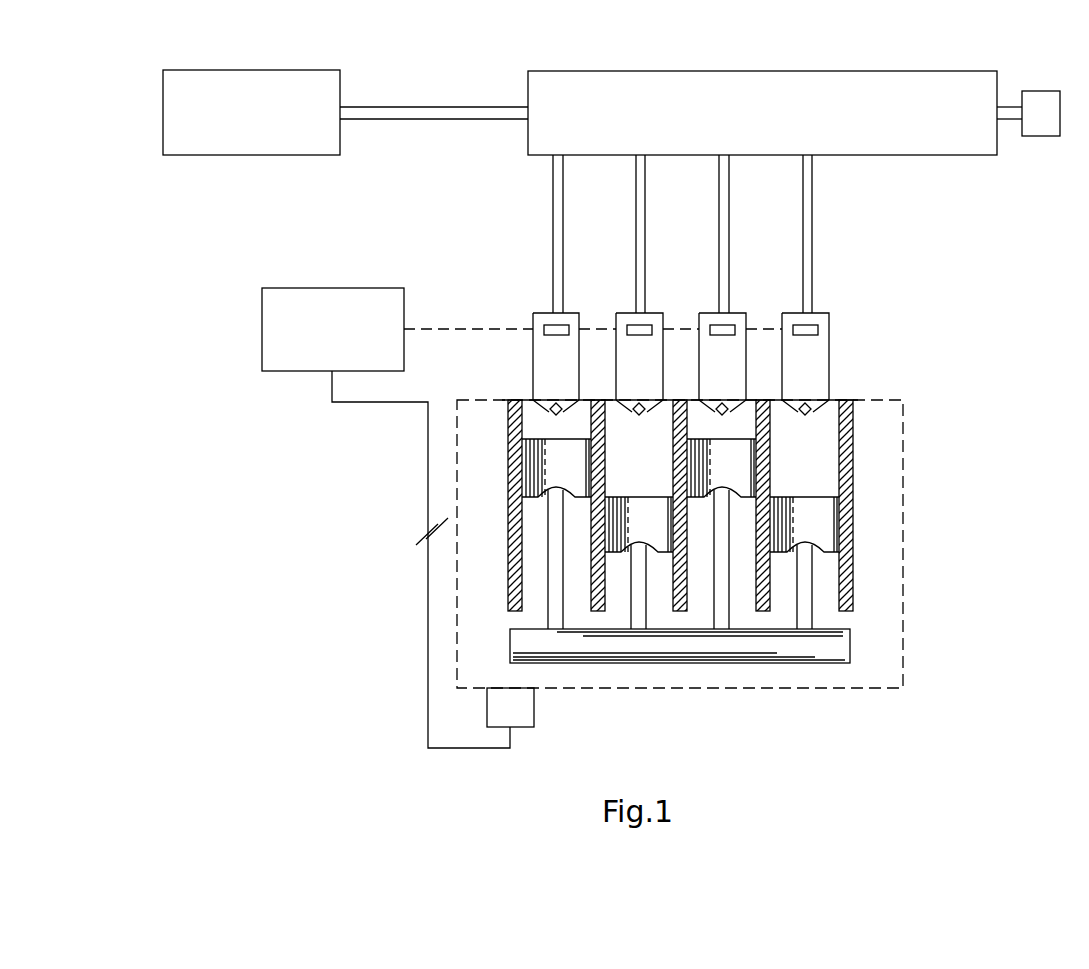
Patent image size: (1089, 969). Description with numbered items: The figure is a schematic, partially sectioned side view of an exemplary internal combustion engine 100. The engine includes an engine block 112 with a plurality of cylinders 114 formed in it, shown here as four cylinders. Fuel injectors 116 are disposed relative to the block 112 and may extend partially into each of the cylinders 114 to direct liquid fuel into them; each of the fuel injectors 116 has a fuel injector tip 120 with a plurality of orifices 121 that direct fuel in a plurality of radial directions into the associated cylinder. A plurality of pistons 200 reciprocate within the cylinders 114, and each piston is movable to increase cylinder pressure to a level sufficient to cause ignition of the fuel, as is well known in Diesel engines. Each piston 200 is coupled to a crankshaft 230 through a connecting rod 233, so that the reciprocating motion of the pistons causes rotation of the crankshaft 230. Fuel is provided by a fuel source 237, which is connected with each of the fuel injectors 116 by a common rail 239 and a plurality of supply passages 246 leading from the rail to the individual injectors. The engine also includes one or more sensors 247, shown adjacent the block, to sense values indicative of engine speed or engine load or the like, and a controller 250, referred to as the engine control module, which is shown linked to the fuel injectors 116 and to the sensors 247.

The internal combustion engine 100 is at (383, 462).
The engine block 112 is at (903, 482).
The cylinders 114 is at (815, 470).
The fuel injectors 116 is at (829, 350).
The fuel injector tip 120 is at (636, 415).
The orifices 121 is at (547, 405).
The pistons 200 is at (822, 524).
The crankshaft 230 is at (836, 645).
The connecting rod 233 is at (803, 620).
The fuel source 237 is at (266, 70).
The common rail 239 is at (880, 70).
The supply passages 246 is at (813, 238).
The sensors 247 is at (534, 715).
The controller 250 is at (333, 288).